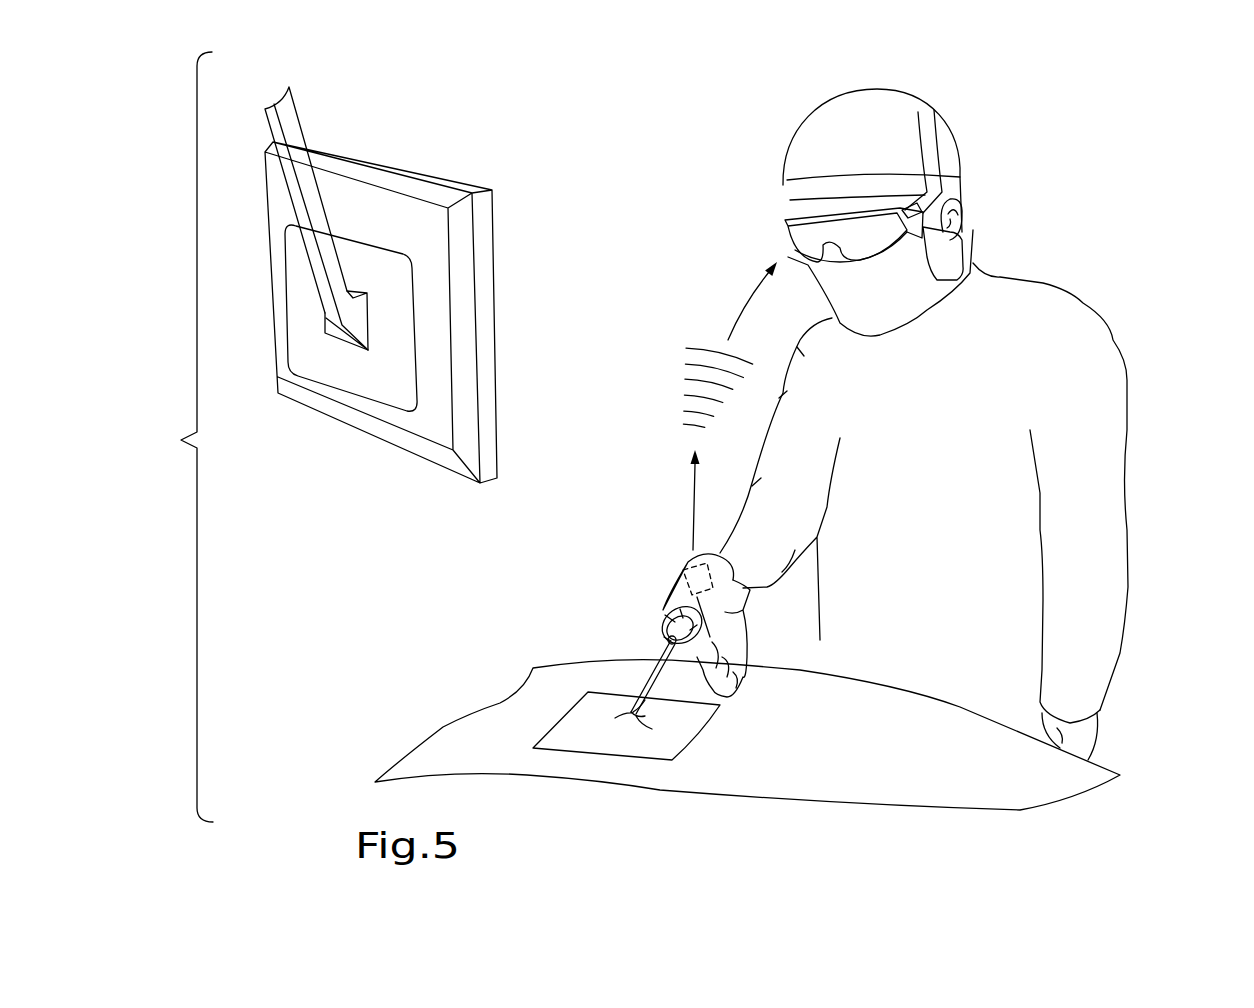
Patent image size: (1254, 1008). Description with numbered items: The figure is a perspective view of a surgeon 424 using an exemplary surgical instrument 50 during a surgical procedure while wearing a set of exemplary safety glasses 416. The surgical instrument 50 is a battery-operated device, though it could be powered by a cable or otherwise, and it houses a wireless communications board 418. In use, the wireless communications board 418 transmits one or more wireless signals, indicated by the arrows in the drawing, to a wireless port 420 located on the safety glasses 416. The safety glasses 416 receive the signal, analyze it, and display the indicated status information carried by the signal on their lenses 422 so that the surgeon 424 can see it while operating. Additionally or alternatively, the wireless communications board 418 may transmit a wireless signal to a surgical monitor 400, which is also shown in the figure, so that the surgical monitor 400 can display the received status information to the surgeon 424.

The surgical monitor 400 is at (472, 170).
The safety glasses 416 is at (860, 181).
The wireless communications board 418 is at (683, 570).
The wireless port 420 is at (917, 195).
The lenses 422 is at (947, 233).
The surgeon 424 is at (960, 424).
The surgical instrument 50 is at (631, 631).